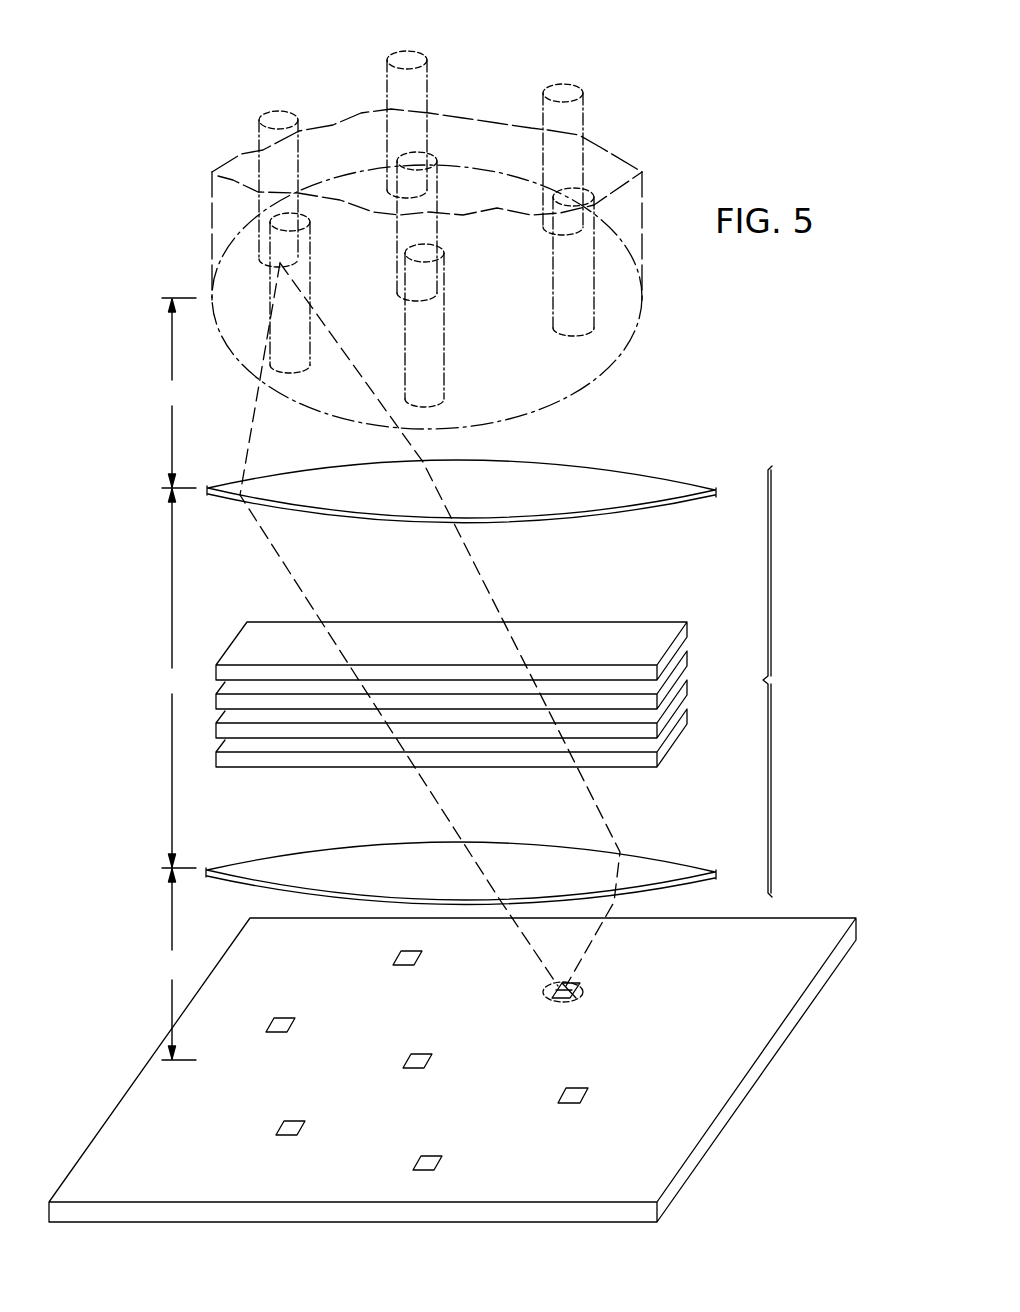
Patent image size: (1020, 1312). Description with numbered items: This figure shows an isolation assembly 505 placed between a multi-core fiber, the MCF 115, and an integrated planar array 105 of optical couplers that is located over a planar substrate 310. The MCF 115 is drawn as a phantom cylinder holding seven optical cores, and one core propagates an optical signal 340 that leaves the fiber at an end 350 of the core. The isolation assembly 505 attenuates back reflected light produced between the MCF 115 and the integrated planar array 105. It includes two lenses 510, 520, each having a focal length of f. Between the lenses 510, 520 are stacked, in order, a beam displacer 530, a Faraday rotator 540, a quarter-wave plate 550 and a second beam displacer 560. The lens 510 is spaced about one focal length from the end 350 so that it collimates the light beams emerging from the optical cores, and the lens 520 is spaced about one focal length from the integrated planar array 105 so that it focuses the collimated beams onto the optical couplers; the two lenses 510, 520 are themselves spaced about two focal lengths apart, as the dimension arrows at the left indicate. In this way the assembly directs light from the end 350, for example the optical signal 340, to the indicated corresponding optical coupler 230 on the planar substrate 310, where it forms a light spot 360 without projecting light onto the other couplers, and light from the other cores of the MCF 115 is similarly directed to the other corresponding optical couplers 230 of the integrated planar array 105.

The integrated planar array 105 is at (452, 617).
The MCF 115 is at (212, 190).
The optical coupler 230 is at (545, 993).
The planar substrate 310 is at (733, 1133).
The optical signal 340 is at (407, 58).
The end 350 is at (397, 250).
The light spot 360 is at (582, 994).
The isolation assembly 505 is at (512, 667).
The lens 510 is at (692, 475).
The lens 520 is at (690, 856).
The beam displacer 530 is at (690, 625).
The Faraday rotator 540 is at (690, 654).
The quarter-wave plate 550 is at (690, 688).
The beam displacer 560 is at (690, 715).